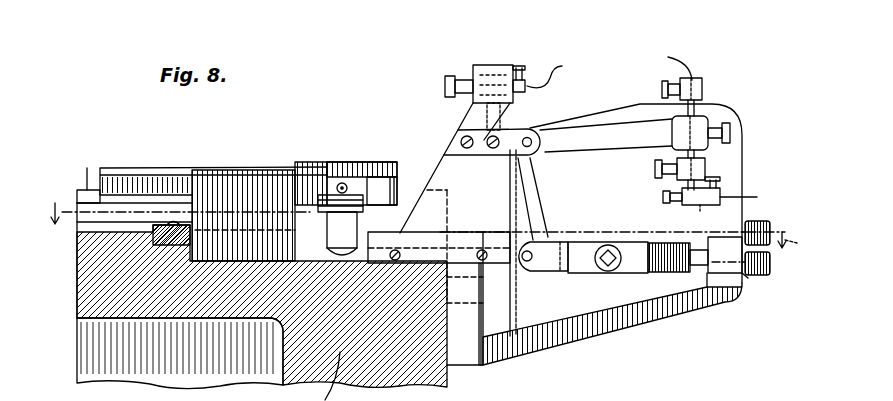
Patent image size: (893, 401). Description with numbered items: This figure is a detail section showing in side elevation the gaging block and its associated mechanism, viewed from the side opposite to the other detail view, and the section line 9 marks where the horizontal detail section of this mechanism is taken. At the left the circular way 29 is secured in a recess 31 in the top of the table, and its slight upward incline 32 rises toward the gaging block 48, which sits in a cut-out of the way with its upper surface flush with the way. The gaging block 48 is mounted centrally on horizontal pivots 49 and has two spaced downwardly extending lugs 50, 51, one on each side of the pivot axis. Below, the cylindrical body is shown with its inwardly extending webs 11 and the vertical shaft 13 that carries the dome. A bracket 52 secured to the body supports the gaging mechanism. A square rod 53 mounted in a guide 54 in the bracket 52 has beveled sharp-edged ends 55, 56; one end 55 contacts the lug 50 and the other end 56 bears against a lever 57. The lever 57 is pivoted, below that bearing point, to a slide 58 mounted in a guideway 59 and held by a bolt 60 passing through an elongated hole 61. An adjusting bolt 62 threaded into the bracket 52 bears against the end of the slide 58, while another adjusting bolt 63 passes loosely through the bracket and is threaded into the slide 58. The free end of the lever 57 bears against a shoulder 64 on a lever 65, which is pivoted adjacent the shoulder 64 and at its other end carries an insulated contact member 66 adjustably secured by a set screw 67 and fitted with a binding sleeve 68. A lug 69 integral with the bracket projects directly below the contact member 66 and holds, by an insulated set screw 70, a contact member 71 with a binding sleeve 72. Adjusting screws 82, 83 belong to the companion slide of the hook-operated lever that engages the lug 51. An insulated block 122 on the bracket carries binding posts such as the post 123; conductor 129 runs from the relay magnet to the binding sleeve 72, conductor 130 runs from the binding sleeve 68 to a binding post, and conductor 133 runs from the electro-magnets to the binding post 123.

The section line 9— 9 is at (55, 212).
The webs 11 is at (107, 353).
The shaft 13 is at (340, 258).
The circular way 29 is at (135, 190).
The recess 31 is at (88, 195).
The upward incline 32 is at (286, 165).
The gaging block 48 is at (338, 183).
The horizontal pivots 49 is at (343, 187).
The lug 50 is at (333, 237).
The lug 51 is at (347, 233).
The bracket 52 is at (660, 307).
The square rod 53 is at (450, 235).
The guide 54 is at (458, 255).
The end of square rod 55 is at (355, 243).
The end of square rod 56 is at (528, 239).
The lever 57 is at (530, 200).
The slide 58 is at (580, 260).
The guideway 59 is at (696, 265).
The bolt 60 is at (610, 257).
The elongated hole 61 is at (606, 268).
The adjusting bolt 62 is at (773, 253).
The adjusting bolt 63 is at (755, 276).
The shoulder 64 is at (523, 155).
The lever 65 is at (587, 133).
The contact member 66 is at (707, 109).
The set screw 67 is at (734, 136).
The binding sleeve 68 is at (697, 87).
The lug 69 is at (700, 167).
The set screw 70 is at (657, 176).
The contact member 71 is at (681, 189).
The binding sleeve 72 is at (700, 203).
The adjusting screw 82 is at (770, 237).
The adjusting screw 83 is at (750, 225).
The insulated block 122 is at (493, 82).
The binding post 123 is at (460, 90).
The conductor 129 is at (757, 197).
The conductor 130 is at (699, 60).
The conductor 133 is at (556, 68).